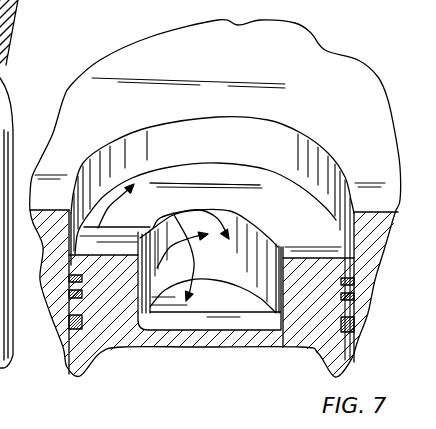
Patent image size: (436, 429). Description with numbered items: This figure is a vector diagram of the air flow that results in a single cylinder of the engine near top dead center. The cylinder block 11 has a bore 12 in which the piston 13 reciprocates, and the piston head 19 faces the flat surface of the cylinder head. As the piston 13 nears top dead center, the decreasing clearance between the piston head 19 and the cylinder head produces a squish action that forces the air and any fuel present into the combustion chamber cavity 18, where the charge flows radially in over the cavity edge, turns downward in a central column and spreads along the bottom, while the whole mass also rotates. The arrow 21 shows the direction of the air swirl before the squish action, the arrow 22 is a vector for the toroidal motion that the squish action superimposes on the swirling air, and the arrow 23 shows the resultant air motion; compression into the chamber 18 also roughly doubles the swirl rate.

The cylinder block 11 is at (8, 62).
The bore 12 is at (292, 139).
The piston 13 is at (10, 138).
The combustion chamber cavity 18 is at (258, 231).
The piston head 19 is at (248, 209).
The arrow 21 is at (122, 196).
The arrow 22 is at (126, 226).
The arrow 23 is at (181, 195).